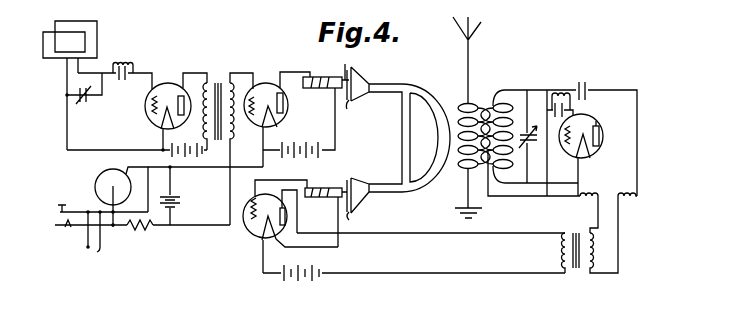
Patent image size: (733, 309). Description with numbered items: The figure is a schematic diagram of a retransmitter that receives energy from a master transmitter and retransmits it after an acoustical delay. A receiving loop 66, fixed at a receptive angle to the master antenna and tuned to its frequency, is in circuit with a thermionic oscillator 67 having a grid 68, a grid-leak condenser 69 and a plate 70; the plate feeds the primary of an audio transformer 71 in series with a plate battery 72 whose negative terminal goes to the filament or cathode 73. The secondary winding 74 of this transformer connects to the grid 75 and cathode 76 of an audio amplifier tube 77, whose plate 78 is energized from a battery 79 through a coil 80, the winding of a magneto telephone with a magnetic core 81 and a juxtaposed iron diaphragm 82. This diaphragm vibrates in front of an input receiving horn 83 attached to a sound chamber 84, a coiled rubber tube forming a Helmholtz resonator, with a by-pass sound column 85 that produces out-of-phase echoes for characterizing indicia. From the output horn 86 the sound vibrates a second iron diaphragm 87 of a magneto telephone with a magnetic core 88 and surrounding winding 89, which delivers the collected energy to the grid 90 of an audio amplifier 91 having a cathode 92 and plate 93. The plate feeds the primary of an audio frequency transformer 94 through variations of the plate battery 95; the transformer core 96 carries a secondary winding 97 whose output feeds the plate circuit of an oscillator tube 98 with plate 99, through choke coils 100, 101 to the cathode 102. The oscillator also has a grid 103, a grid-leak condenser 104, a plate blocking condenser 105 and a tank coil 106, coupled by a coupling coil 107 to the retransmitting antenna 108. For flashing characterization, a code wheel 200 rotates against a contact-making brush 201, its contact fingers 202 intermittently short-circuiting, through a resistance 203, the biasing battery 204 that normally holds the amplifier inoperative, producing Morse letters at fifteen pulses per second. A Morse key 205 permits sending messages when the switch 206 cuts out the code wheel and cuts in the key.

The receiving loop 66 is at (52, 30).
The thermionic oscillator 67 is at (170, 83).
The grid 68 is at (151, 104).
The grid-leak condenser 69 is at (122, 79).
The plate 70 is at (185, 97).
The audio transformer 71 is at (222, 146).
The plate battery 72 is at (191, 162).
The filament or cathode 73 is at (161, 125).
The secondary winding 74 is at (219, 82).
The grid 75 is at (252, 118).
The cathode 76 is at (277, 121).
The audio amplifier tube 77 is at (270, 83).
The plate 78 is at (284, 103).
The battery 79 is at (300, 159).
The coil 80 is at (331, 77).
The magnetic core 81 is at (344, 64).
The iron diaphragm 82 is at (353, 111).
The input receiving horn 83 is at (362, 77).
The sound chamber 84 is at (413, 90).
The by-pass sound column 85 is at (402, 139).
The output horn 86 is at (371, 197).
The iron diaphragm 87 is at (358, 219).
The magnetic core 88 is at (333, 188).
The winding 89 is at (304, 198).
The grid 90 is at (246, 222).
The audio amplifier 91 is at (251, 225).
The cathode 92 is at (262, 240).
The plate 93 is at (284, 243).
The audio frequency transformer 94 is at (563, 252).
The plate battery 95 is at (302, 281).
The core 96 is at (576, 269).
The secondary winding 97 is at (591, 254).
The oscillator tube 98 is at (594, 124).
The plate 99 is at (600, 136).
The choke coil 100 is at (583, 199).
The choke coil 101 is at (626, 199).
The cathode 102 is at (595, 152).
The grid 103 is at (580, 155).
The grid-leak condenser 104 is at (558, 94).
The plate blocking condenser 105 is at (587, 87).
The tank coil 106 is at (505, 99).
The coupling coil 107 is at (464, 170).
The retransmitting antenna 108 is at (475, 31).
The code wheel 200 is at (95, 188).
The contact-making brush 201 is at (127, 167).
The contact fingers 202 is at (99, 174).
The resistance 203 is at (138, 235).
The biasing battery 204 is at (179, 201).
The Morse key 205 is at (63, 217).
The switch 206 is at (86, 248).